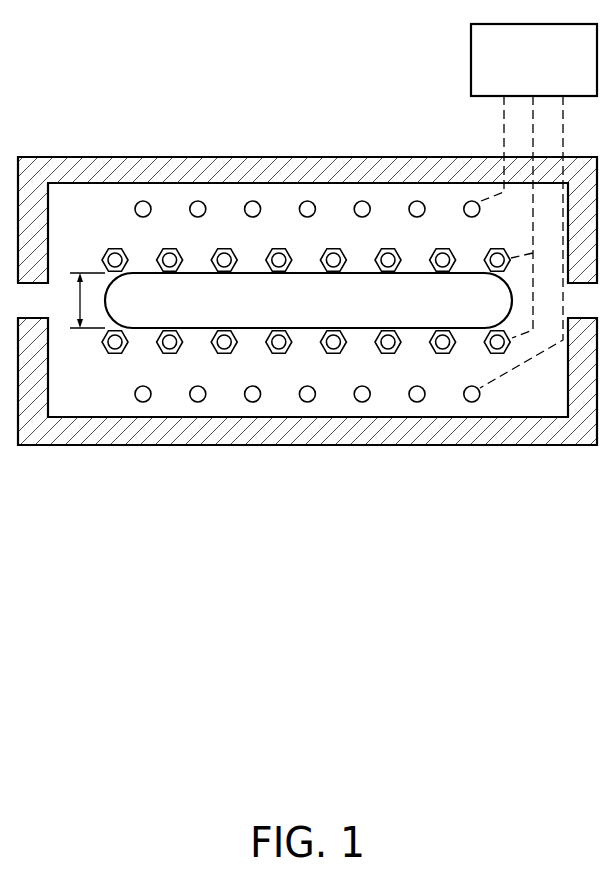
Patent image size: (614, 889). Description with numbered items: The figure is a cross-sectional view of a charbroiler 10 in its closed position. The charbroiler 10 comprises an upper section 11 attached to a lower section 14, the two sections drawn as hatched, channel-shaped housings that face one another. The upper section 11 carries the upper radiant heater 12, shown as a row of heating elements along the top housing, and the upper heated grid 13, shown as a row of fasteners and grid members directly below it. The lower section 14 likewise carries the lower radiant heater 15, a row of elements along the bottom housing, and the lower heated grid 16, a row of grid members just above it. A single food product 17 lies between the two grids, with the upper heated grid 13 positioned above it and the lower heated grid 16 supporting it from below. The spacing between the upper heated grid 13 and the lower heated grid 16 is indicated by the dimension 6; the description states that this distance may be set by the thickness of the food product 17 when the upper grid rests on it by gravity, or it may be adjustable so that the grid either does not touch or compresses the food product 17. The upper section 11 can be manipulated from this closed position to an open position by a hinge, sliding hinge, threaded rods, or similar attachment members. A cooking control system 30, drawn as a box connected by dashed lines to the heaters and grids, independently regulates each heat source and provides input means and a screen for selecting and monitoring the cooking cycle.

The charbroiler 10 is at (147, 107).
The upper section 11 is at (305, 172).
The upper radiant heater 12 is at (413, 203).
The upper heated grid 13 is at (98, 248).
The lower section 14 is at (222, 433).
The lower radiant heater 15 is at (365, 400).
The lower heated grid 16 is at (98, 329).
The food product 17 is at (350, 302).
The thickness dimension 6 is at (81, 300).
The cooking control system 30 is at (585, 62).